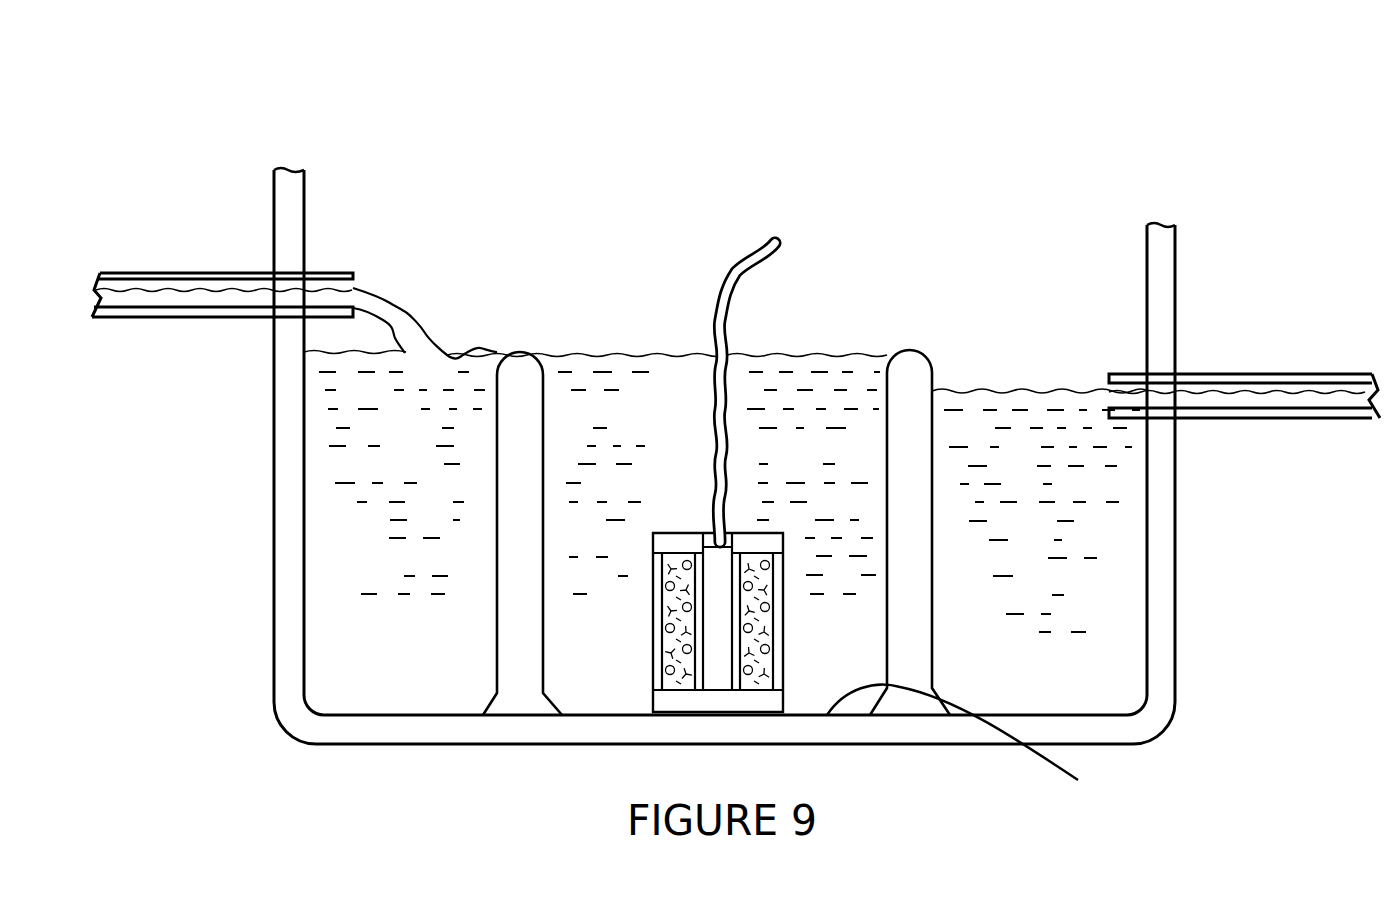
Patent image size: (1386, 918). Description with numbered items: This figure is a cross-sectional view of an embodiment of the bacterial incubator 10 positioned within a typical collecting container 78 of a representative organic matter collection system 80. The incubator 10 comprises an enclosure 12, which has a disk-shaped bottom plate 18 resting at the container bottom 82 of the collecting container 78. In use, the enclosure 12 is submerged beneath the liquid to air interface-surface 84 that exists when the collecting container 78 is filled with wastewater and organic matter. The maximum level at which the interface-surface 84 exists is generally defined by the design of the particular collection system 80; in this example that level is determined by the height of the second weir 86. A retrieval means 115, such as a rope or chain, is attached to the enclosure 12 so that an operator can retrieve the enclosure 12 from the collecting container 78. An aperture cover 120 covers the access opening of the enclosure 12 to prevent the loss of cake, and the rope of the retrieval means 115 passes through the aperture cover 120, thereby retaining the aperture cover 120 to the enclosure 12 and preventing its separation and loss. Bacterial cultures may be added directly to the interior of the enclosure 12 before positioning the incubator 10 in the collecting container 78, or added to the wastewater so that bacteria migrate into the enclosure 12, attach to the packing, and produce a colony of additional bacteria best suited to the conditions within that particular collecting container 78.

The collection system 80 is at (545, 163).
The container bottom 82 is at (966, 751).
The liquid to air interface-surface 84 is at (800, 348).
The second weir 86 is at (908, 546).
The collecting container 78 is at (642, 662).
The bacterial incubator 10 is at (763, 471).
The enclosure 12 is at (783, 613).
The bottom plate 18 is at (677, 702).
The retrieval means 115 is at (733, 262).
The aperture cover 120 is at (715, 533).